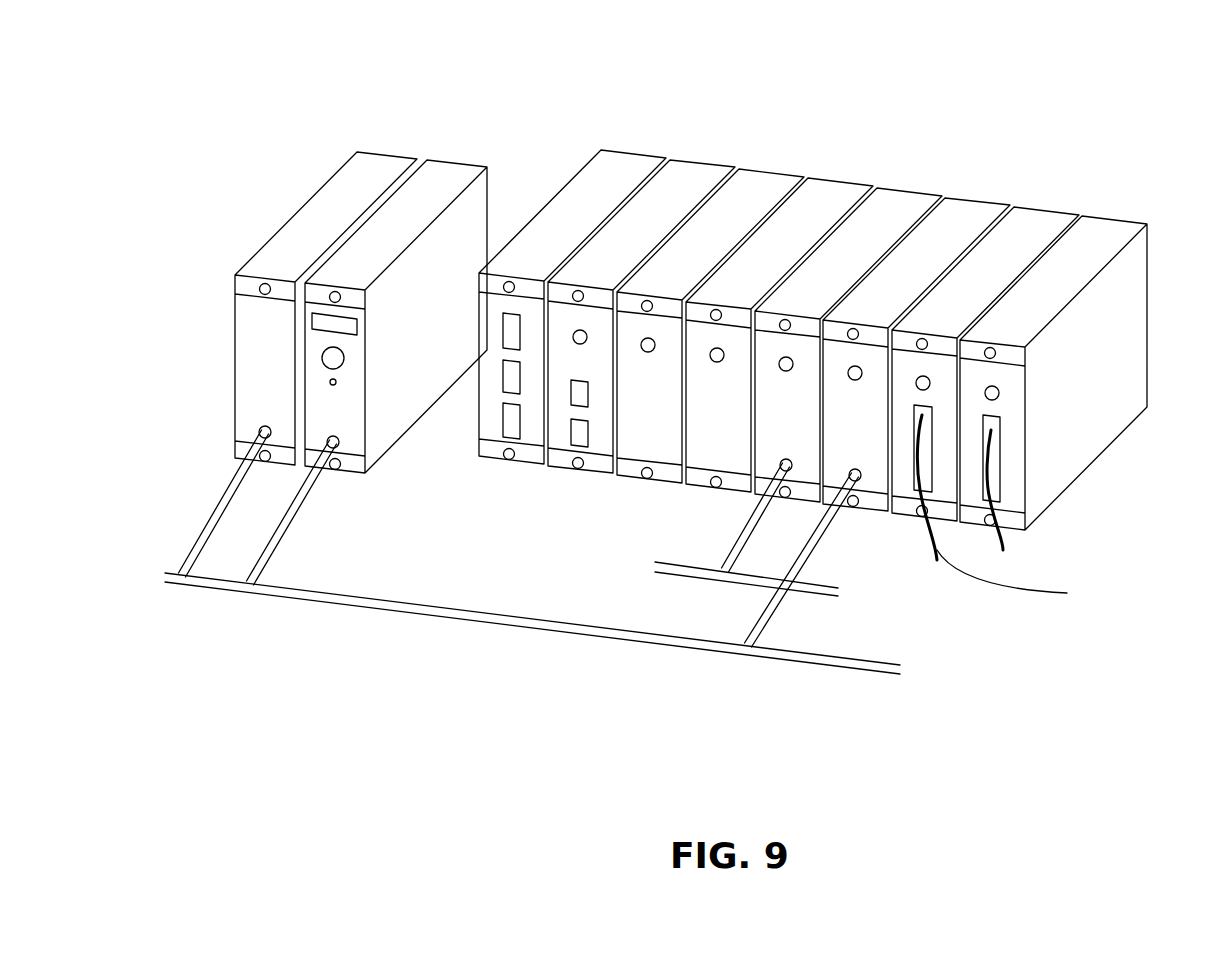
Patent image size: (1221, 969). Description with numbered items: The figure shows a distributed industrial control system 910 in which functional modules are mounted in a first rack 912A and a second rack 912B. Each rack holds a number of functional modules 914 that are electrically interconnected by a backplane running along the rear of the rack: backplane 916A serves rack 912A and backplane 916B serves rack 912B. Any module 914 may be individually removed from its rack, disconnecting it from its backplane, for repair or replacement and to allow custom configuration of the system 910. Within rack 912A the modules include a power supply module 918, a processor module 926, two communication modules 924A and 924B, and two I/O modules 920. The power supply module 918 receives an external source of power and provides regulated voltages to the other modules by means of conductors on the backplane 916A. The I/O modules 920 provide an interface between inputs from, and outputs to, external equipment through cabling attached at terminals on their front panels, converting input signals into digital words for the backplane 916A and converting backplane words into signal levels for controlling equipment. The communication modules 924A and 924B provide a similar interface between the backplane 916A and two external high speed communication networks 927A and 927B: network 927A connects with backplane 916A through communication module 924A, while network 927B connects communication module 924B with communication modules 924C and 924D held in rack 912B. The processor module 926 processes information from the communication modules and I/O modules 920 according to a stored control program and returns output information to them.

The distributed industrial control system 910 is at (1035, 748).
The first rack 912A is at (1053, 467).
The second rack 912B is at (449, 380).
The functional modules 914 is at (773, 343).
The backplane 916A is at (1143, 140).
The backplane 916B is at (514, 96).
The power supply module 918 is at (495, 435).
The I/O modules 920 is at (940, 390).
The communication module 924A is at (793, 353).
The communication module 924B is at (870, 358).
The communication module 924C is at (253, 403).
The communication module 924D is at (349, 443).
The processor module 926 is at (564, 445).
The high speed communication network 927A is at (665, 562).
The high speed communication network 927B is at (380, 600).